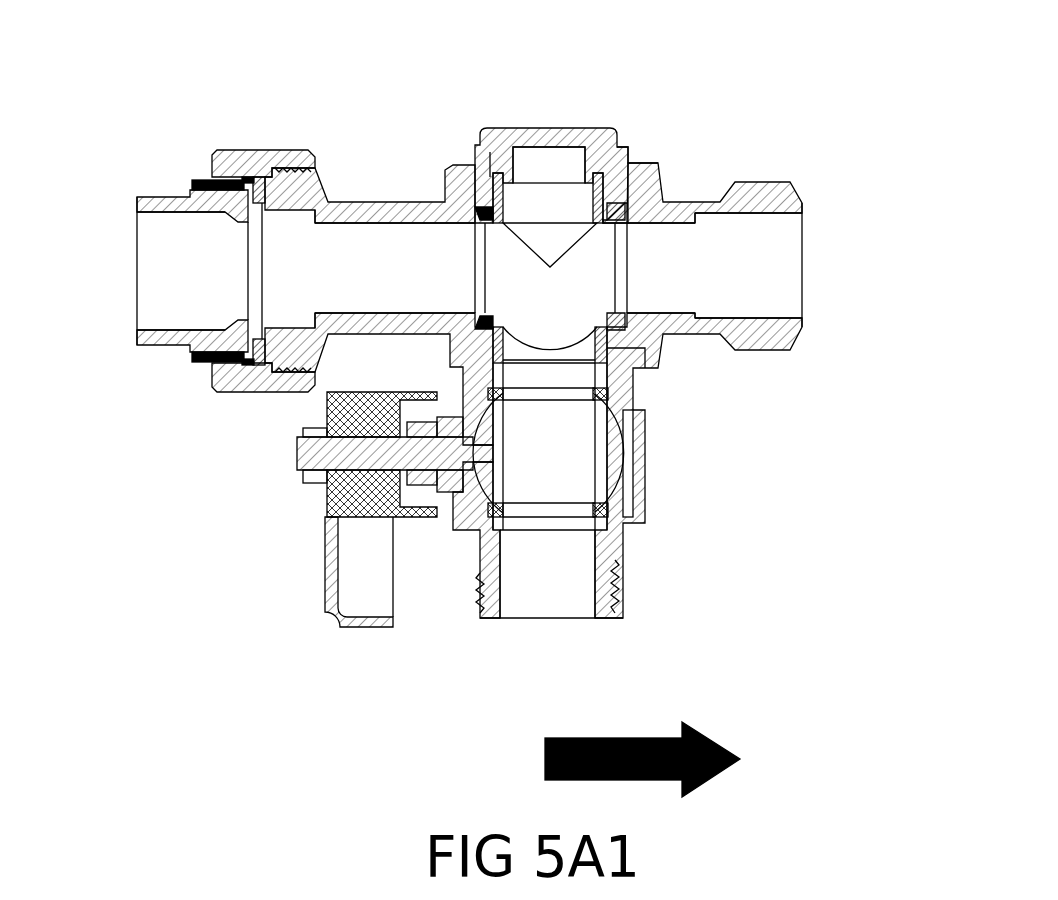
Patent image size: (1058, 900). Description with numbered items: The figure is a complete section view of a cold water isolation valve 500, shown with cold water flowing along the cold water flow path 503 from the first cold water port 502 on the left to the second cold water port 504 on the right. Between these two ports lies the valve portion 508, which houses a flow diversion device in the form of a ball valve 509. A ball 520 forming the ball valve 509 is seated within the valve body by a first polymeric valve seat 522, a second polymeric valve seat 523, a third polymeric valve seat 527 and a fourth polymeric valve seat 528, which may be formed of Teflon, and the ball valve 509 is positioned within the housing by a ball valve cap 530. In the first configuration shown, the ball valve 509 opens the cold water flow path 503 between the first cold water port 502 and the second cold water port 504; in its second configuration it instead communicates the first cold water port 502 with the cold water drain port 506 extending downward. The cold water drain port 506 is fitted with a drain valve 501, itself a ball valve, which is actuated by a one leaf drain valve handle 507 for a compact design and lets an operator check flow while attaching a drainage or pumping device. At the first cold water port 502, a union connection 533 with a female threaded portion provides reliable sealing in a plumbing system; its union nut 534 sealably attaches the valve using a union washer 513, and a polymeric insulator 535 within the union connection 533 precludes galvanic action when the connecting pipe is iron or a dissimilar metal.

The cold water isolation valve 500 is at (480, 404).
The drain valve 501 is at (620, 467).
The first cold water port 502 is at (132, 272).
The cold water flow path 503 is at (572, 738).
The second cold water port 504 is at (803, 263).
The cold water drain port 506 is at (547, 618).
The drain valve handle 507 is at (327, 510).
The valve portion 508 is at (462, 166).
The ball valve 509 is at (550, 190).
The union washer 513 is at (262, 178).
The ball 520 is at (610, 353).
The first polymeric valve seat 522 is at (623, 143).
The second polymeric valve seat 523 is at (635, 378).
The third polymeric valve seat 527 is at (486, 199).
The fourth polymeric valve seat 528 is at (627, 330).
The ball valve cap 530 is at (598, 128).
The union connection 533 is at (162, 203).
The union nut 534 is at (297, 157).
The insulator 535 is at (195, 180).